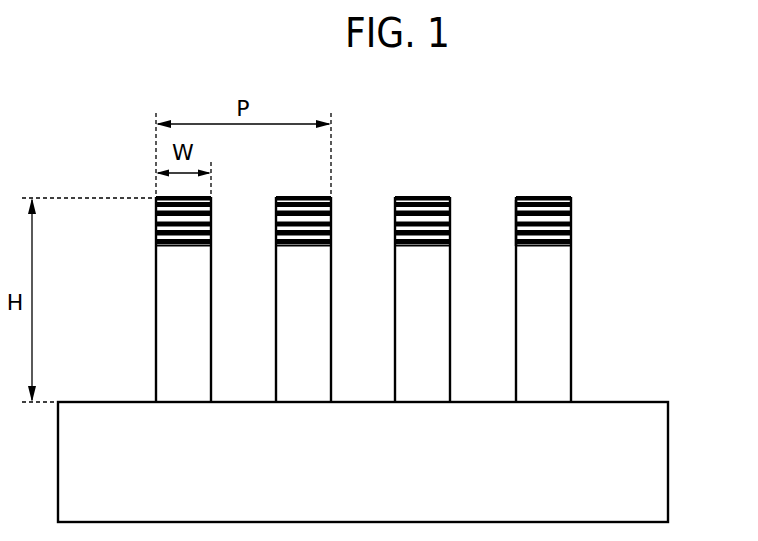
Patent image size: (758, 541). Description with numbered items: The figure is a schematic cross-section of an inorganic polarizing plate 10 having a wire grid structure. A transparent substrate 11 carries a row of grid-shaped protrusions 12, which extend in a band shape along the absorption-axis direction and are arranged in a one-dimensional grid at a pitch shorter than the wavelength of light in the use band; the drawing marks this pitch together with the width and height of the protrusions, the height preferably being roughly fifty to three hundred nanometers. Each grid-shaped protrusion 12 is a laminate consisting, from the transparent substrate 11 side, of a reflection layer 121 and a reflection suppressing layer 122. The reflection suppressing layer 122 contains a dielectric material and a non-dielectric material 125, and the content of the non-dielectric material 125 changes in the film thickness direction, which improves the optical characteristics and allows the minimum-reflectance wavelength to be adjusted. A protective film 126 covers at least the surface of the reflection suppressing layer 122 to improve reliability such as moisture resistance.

The inorganic polarizing plate 10 is at (646, 156).
The transparent substrate 11 is at (657, 467).
The grid-shaped protrusion 12 is at (660, 208).
The reflection layer 121 is at (565, 282).
The reflection suppressing layer 122 is at (570, 218).
The non-dielectric material 125 is at (517, 210).
The protective film 126 is at (543, 198).